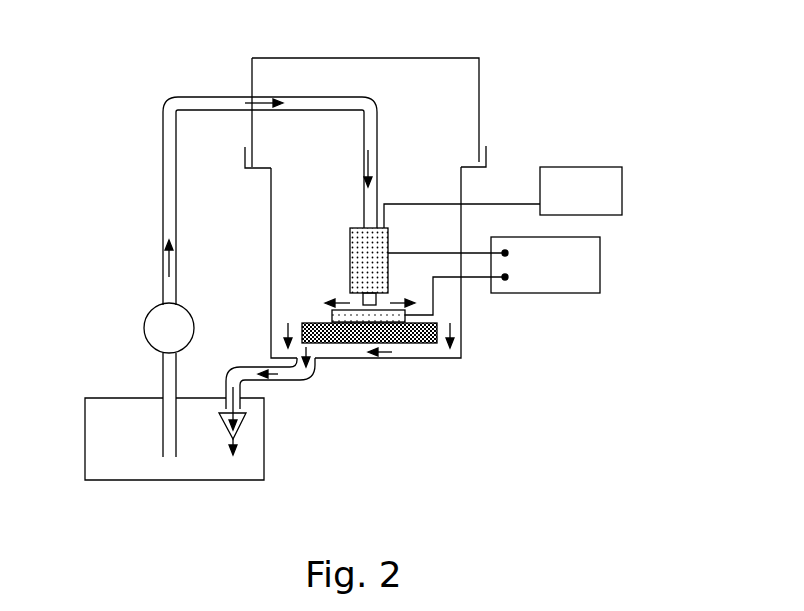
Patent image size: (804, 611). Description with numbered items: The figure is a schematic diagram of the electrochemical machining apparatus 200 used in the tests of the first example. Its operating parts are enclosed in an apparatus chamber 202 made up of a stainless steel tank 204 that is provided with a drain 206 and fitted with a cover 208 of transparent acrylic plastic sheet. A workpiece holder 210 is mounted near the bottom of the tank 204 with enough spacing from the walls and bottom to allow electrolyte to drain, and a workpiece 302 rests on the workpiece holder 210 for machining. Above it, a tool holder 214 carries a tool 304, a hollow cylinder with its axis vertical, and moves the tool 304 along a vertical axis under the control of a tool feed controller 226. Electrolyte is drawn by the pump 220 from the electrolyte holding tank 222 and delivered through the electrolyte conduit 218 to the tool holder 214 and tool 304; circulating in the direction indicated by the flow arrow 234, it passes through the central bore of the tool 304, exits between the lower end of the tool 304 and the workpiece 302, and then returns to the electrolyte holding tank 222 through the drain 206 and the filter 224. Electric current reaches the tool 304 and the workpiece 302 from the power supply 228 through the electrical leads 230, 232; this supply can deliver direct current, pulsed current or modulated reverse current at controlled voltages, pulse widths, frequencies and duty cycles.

The electrochemical machining apparatus 200 is at (510, 64).
The apparatus chamber 202 is at (443, 138).
The stainless steel tank 204 is at (271, 258).
The drain 206 is at (310, 366).
The cover 208 is at (252, 58).
The workpiece holder 210 is at (422, 342).
The tool holder 214 is at (347, 233).
The electrolyte conduit 218 is at (163, 165).
The pump 220 is at (145, 320).
The electrolyte holding tank 222 is at (133, 448).
The filter 224 is at (237, 433).
The tool feed controller 226 is at (597, 204).
The power supply 228 is at (573, 278).
The electrical lead 230 is at (433, 298).
The electrical lead 232 is at (400, 253).
The flow arrow 234 is at (168, 252).
The workpiece 302 is at (332, 313).
The tool 304 is at (350, 297).